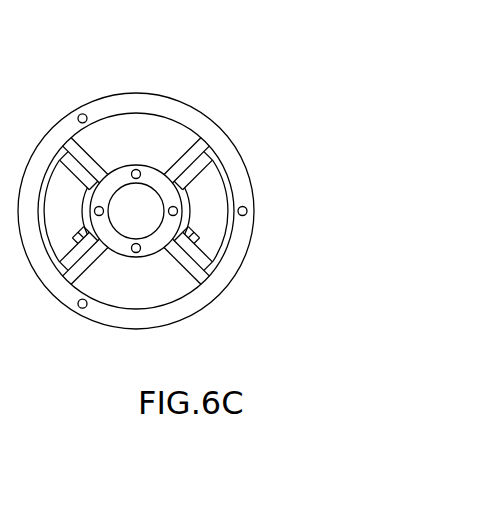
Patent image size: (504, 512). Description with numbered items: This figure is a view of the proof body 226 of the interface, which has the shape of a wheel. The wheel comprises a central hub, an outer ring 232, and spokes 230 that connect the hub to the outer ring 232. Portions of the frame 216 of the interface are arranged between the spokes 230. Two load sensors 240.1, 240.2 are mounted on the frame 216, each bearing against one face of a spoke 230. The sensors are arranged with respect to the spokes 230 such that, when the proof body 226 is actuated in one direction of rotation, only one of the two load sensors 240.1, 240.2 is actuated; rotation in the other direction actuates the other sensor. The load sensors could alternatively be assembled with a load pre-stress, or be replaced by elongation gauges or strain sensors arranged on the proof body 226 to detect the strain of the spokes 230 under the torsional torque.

The proof body 226 is at (43, 312).
The outer ring 232 is at (122, 108).
The spokes 230 is at (183, 162).
The frame 216 is at (61, 182).
The load sensor 240.1 is at (96, 275).
The load sensor 240.2 is at (173, 260).